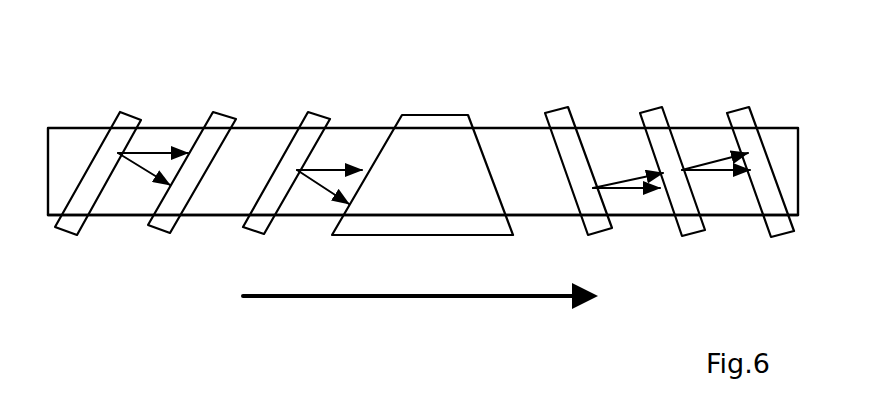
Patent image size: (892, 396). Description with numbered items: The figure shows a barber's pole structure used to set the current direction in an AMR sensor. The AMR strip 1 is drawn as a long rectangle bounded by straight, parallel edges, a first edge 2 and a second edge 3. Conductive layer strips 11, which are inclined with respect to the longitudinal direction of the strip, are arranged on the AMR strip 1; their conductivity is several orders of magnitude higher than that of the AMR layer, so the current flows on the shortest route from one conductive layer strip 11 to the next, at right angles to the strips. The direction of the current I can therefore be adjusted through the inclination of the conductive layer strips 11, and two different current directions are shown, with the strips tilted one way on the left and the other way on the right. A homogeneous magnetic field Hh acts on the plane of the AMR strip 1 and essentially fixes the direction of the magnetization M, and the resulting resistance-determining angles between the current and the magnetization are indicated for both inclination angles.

The AMR strip 1 is at (523, 170).
The first edge 2 is at (365, 118).
The second edge 3 is at (208, 222).
The conductive layer strips 11 is at (310, 130).
The magnetization M is at (152, 152).
The current I is at (137, 170).
The homogeneous magnetic field Hh is at (420, 308).